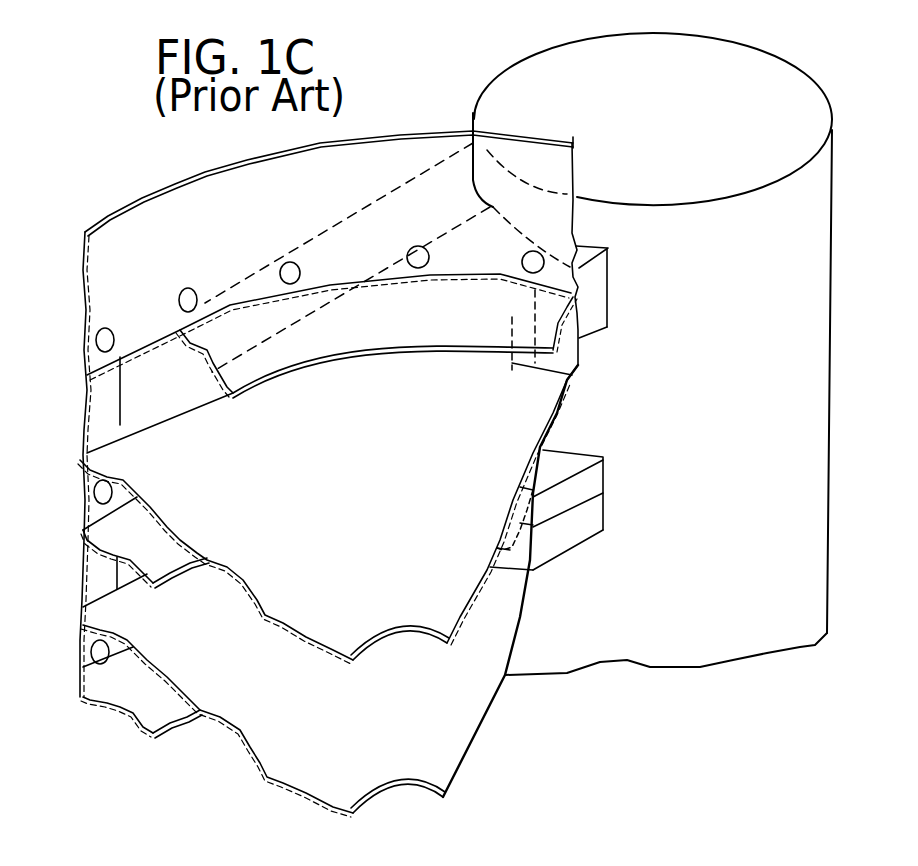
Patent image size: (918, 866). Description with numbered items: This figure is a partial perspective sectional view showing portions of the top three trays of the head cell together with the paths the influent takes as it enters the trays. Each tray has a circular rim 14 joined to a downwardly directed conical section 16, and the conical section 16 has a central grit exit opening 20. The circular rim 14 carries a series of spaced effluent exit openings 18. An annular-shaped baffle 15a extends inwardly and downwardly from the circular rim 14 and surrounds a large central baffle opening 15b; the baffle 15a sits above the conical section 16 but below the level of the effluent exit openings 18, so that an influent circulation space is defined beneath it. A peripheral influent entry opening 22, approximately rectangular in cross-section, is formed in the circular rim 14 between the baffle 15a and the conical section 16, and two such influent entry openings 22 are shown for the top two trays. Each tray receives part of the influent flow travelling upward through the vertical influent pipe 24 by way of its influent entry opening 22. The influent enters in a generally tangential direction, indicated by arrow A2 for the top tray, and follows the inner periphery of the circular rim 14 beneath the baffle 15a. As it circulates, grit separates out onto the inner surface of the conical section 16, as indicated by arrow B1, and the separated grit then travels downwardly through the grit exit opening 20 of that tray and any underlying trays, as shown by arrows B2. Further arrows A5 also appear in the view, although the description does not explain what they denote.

The circular rim 14 is at (368, 133).
The annular-shaped baffle 15a is at (578, 338).
The central baffle opening 15b is at (163, 570).
The conical section 16 is at (300, 573).
The effluent exit openings 18 is at (112, 336).
The grit exit opening 20 is at (373, 633).
The influent entry opening 22 is at (515, 365).
The vertical influent pipe 24 is at (762, 105).
The arrow indicating tangential influent entry A2 is at (338, 375).
The direction arrow A5 is at (58, 374).
The arrow indicating grit separation B1 is at (330, 380).
The arrows indicating downward grit travel B2 is at (403, 680).